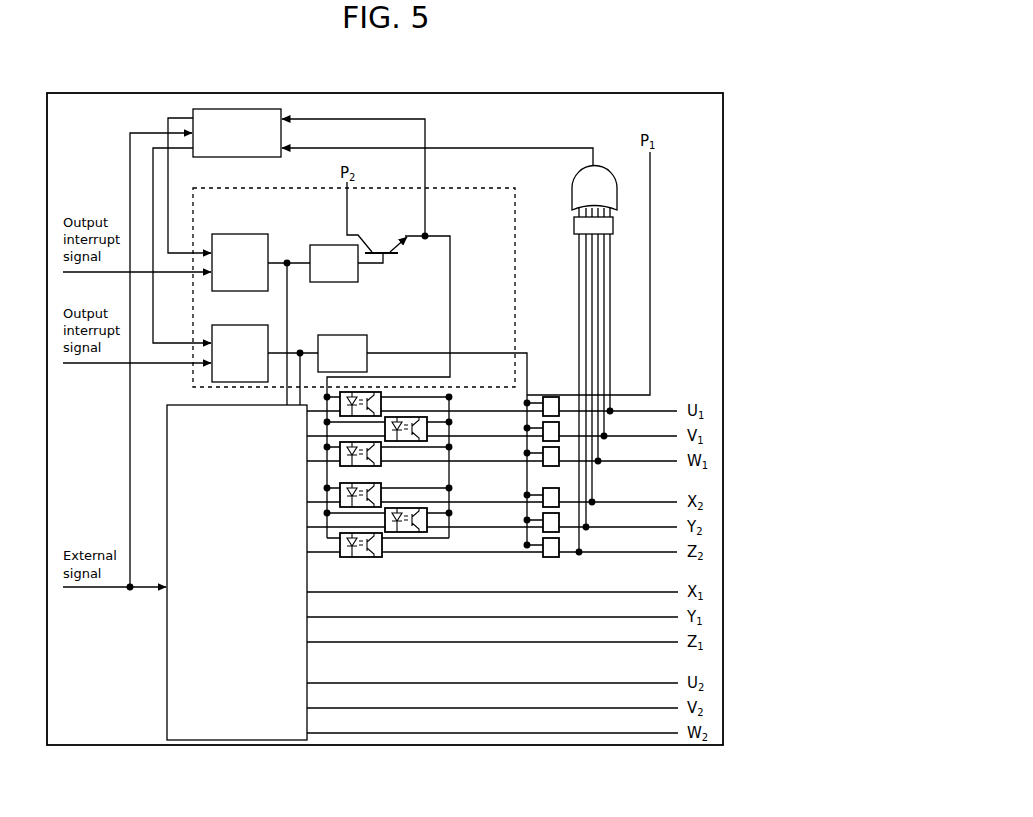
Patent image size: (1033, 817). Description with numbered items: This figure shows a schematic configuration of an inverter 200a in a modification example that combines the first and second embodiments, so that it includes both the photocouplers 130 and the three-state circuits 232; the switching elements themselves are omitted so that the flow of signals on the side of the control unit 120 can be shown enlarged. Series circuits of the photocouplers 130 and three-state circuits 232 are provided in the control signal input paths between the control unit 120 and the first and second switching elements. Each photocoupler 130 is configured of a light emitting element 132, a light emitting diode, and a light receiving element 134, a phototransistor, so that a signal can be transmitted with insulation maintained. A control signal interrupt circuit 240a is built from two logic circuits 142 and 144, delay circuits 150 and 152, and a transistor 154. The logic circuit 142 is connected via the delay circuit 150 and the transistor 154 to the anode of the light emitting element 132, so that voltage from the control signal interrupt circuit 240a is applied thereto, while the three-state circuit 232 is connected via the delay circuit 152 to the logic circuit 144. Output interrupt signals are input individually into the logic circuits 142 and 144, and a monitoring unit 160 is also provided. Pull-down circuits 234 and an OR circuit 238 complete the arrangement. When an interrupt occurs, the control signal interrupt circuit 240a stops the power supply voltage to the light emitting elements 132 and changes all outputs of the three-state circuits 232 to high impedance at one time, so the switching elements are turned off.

The inverter 200a is at (668, 92).
The monitoring unit 160 is at (280, 109).
The control signal interrupt circuit 240a is at (306, 182).
The logic circuit 142 is at (256, 228).
The logic circuit 144 is at (256, 319).
The delay circuit 150 is at (338, 239).
The delay circuit 152 is at (346, 329).
The transistor 154 is at (412, 215).
The control unit 120 is at (192, 395).
The photocoupler 130 is at (405, 491).
The light emitting element 132 is at (335, 562).
The light receiving element 134 is at (376, 562).
The three-state circuit 232 is at (557, 412).
The pull-down circuit 234 is at (576, 223).
The OR circuit 238 is at (576, 197).